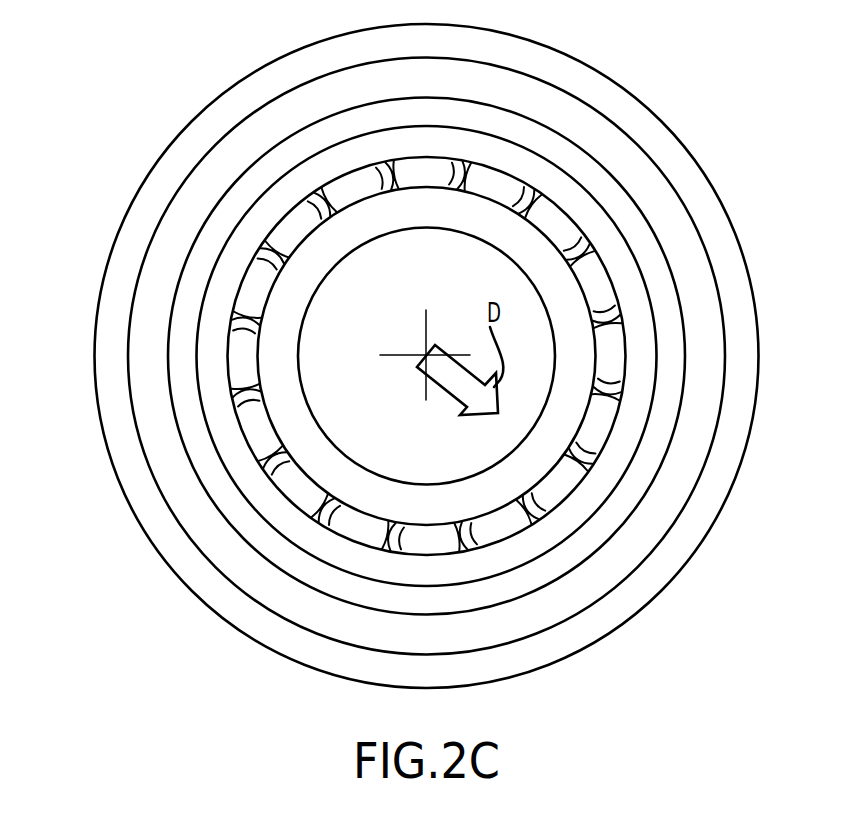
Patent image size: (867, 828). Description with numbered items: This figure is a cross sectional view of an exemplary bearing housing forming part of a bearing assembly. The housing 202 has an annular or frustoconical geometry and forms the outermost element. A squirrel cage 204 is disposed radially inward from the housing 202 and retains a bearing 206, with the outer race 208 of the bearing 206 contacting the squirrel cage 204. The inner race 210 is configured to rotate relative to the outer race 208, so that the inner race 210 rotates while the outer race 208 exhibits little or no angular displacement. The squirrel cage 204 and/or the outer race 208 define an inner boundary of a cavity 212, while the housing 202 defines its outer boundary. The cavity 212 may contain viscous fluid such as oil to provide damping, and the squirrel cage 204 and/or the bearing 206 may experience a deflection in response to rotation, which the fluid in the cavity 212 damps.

The housing 202 is at (160, 533).
The squirrel cage 204 is at (505, 125).
The bearing 206 is at (563, 227).
The outer race 208 is at (275, 197).
The inner race 210 is at (282, 315).
The cavity 212 is at (143, 373).